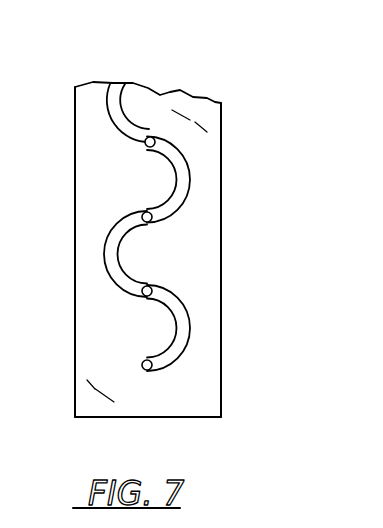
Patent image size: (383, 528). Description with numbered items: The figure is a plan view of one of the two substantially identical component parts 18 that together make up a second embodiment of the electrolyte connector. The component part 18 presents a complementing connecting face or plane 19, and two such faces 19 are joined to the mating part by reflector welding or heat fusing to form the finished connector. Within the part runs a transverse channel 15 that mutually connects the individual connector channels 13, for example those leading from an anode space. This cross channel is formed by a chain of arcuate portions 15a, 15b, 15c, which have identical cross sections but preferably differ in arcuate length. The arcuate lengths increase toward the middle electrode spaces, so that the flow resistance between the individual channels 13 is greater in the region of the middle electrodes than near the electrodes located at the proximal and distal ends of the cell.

The connector channel 13 is at (150, 138).
The transverse channel 15 is at (152, 227).
The arcuate portion 15a is at (190, 181).
The arcuate portion 15b is at (119, 259).
The arcuate portion 15c is at (193, 324).
The component part 18 is at (113, 417).
The connecting face 19 is at (213, 392).